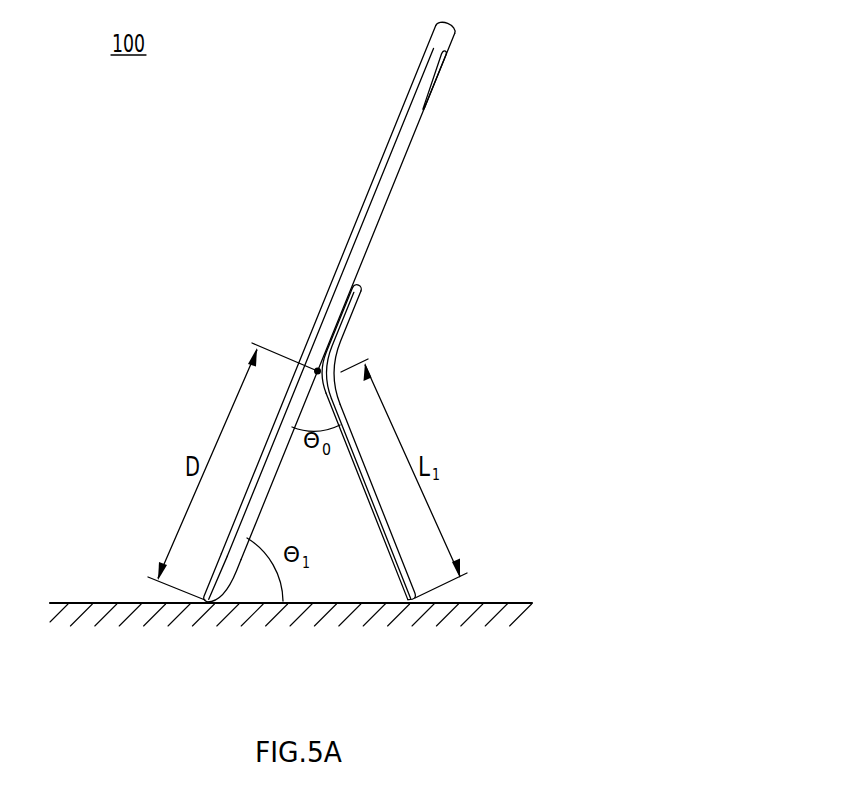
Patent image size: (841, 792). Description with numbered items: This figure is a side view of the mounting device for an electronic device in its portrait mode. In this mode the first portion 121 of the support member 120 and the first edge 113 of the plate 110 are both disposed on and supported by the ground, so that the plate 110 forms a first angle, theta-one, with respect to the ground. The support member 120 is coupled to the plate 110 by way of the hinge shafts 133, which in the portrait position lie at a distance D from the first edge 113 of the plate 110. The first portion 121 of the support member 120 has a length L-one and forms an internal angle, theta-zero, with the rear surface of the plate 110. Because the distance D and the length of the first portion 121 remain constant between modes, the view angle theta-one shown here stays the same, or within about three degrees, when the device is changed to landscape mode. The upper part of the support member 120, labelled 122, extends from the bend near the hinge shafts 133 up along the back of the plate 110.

The plate 110 is at (397, 118).
The first edge 113 is at (204, 604).
The support member 120 is at (376, 442).
The first portion 121 is at (357, 437).
The hinge connection portion of stand 122 is at (348, 326).
The hinge shafts 133 is at (315, 369).